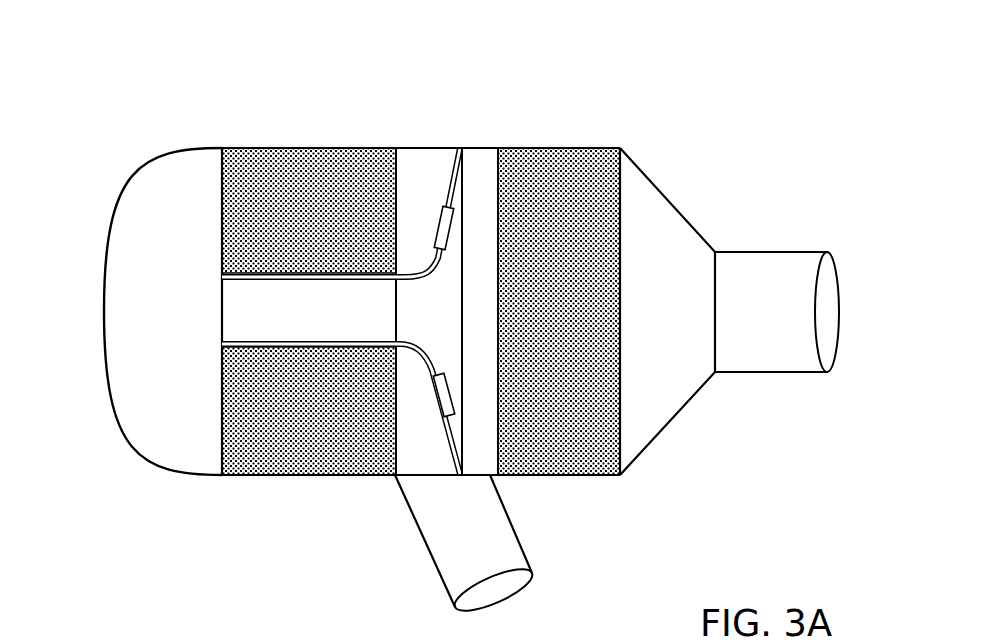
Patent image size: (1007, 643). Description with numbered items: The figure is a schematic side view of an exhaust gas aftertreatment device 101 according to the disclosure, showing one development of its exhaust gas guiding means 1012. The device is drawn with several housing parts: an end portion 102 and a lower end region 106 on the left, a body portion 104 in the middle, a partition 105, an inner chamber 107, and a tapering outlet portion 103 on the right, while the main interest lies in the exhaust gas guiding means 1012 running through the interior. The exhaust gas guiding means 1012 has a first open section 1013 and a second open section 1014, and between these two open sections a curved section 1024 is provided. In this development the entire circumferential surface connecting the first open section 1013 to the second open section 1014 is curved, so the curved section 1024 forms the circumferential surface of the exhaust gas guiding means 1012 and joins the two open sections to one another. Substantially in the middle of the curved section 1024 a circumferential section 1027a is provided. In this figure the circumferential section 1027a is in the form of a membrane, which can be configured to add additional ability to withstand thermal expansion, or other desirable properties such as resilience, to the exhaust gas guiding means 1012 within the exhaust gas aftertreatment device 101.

The exhaust gas aftertreatment device 101 is at (168, 52).
The end cap 102 is at (141, 150).
The outlet cone 103 is at (695, 203).
The housing 104 is at (640, 168).
The partition 105 is at (408, 148).
The end cover 106 is at (122, 425).
The chamber 107 is at (437, 204).
The exhaust gas guiding means 1012 is at (458, 314).
The first open section 1013 is at (372, 302).
The second open section 1014 is at (490, 410).
The curved section 1024 is at (426, 253).
The circumferential section 1027a is at (434, 160).